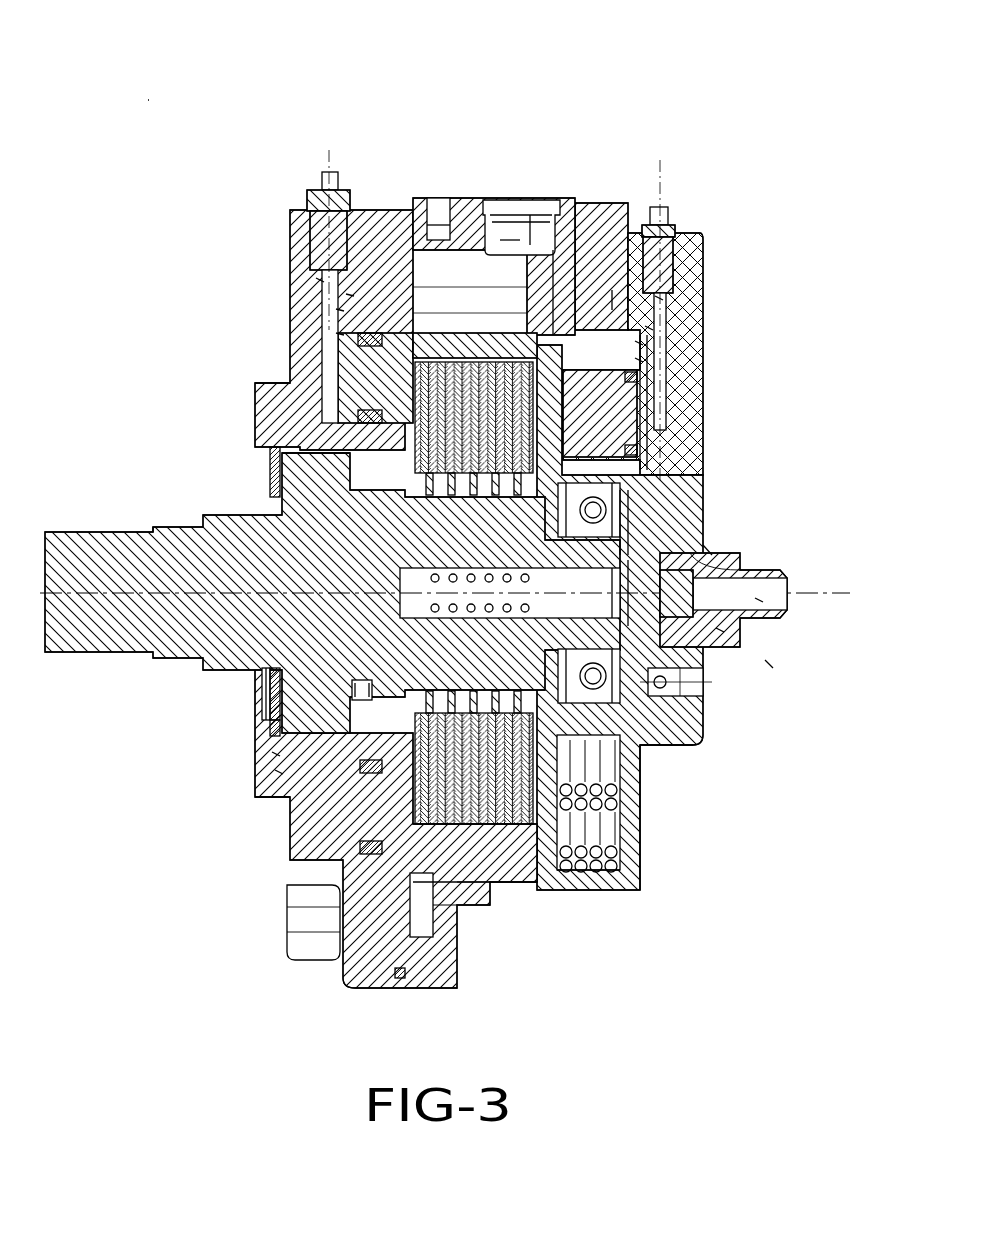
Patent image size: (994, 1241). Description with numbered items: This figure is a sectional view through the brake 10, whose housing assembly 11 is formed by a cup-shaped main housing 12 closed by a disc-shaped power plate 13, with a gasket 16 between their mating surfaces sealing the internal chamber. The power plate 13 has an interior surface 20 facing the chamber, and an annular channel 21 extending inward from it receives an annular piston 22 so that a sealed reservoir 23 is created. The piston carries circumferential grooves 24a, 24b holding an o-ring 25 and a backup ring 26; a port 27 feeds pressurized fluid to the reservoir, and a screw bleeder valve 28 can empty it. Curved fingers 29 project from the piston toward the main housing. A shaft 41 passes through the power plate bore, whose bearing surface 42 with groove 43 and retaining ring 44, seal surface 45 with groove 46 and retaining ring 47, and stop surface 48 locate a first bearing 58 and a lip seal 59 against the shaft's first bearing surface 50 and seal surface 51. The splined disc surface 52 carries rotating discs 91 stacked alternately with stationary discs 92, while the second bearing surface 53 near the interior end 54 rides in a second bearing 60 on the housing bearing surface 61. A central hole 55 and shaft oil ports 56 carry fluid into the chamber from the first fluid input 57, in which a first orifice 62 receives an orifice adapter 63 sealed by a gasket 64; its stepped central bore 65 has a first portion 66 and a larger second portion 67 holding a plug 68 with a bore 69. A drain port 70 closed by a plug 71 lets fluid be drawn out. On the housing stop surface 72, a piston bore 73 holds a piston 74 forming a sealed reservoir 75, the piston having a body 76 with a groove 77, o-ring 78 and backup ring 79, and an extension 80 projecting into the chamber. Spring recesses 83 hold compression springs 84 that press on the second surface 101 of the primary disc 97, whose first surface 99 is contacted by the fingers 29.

The brake 10 is at (148, 100).
The housing assembly 11 is at (410, 198).
The main housing 12 is at (700, 233).
The power plate 13 is at (292, 213).
The gasket 16 is at (442, 280).
The interior surface 20 is at (405, 455).
The annular channel 21 is at (340, 335).
The annular piston 22 is at (340, 380).
The sealed reservoir 23 is at (320, 400).
The circumferential groove 24a is at (295, 889).
The circumferential groove 24b is at (320, 848).
The o-ring 25 is at (340, 310).
The backup ring 26 is at (350, 295).
The port 27 is at (320, 280).
The screw bleeder valve 28 is at (325, 178).
The curved finger 29 is at (416, 345).
The shaft 41 is at (87, 633).
The bearing surface 42 is at (278, 735).
The circumferential groove 43 is at (280, 775).
The retaining ring 44 is at (278, 755).
The seal surface 45 is at (290, 800).
The circumferential groove 46 is at (275, 697).
The retaining ring 47 is at (265, 678).
The stop surface 48 is at (320, 820).
The first bearing surface 50 is at (290, 500).
The seal surface 51 is at (262, 455).
The disc surface 52 is at (620, 420).
The second bearing surface 53 is at (575, 490).
The interior end 54 is at (625, 540).
The central hole 55 is at (557, 601).
The shaft oil port 56 is at (600, 450).
The first fluid input 57 is at (770, 668).
The first bearing 58 is at (170, 535).
The lip seal 59 is at (345, 655).
The second bearing 60 is at (643, 700).
The circumferential bearing surface 61 is at (652, 742).
The first orifice 62 is at (704, 668).
The orifice adapter 63 is at (745, 556).
The gasket 64 is at (712, 555).
The stepped central bore 65 is at (788, 580).
The first portion 66 is at (760, 600).
The second portion 67 is at (728, 562).
The plug 68 is at (745, 612).
The bore 69 is at (722, 632).
The drain port 70 is at (488, 212).
The plug 71 is at (510, 248).
The stop surface 72 is at (560, 375).
The piston bore 73 is at (660, 300).
The piston 74 is at (665, 385).
The sealed reservoir 75 is at (640, 395).
The body 76 is at (625, 405).
The circumferential groove 77 is at (640, 345).
The o-ring 78 is at (640, 362).
The backup ring 79 is at (650, 330).
The extension 80 is at (676, 253).
The spring recess 83 is at (622, 860).
The compression spring 84 is at (627, 888).
The rotating disc 91 is at (435, 845).
The stationary disc 92 is at (470, 830).
The primary disc 97 is at (520, 830).
The first surface 99 is at (535, 223).
The second surface 101 is at (620, 300).